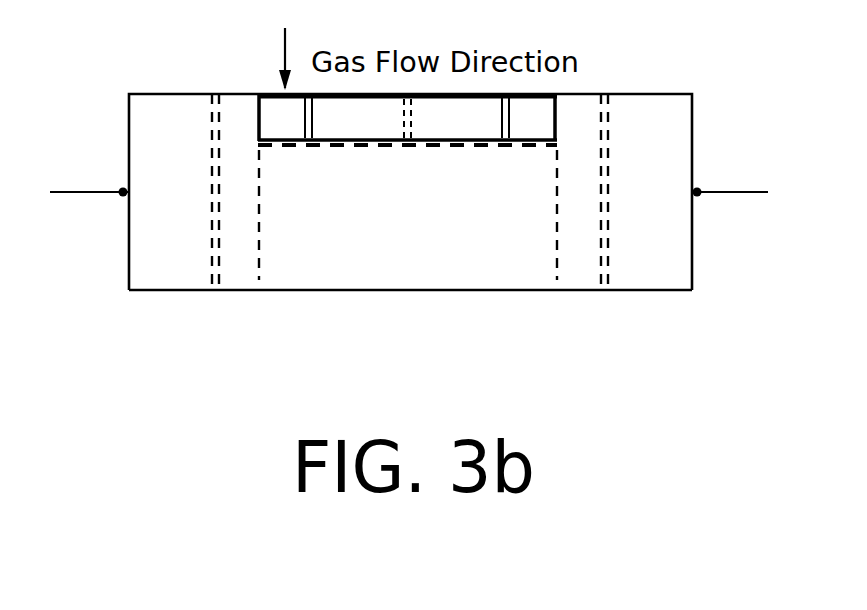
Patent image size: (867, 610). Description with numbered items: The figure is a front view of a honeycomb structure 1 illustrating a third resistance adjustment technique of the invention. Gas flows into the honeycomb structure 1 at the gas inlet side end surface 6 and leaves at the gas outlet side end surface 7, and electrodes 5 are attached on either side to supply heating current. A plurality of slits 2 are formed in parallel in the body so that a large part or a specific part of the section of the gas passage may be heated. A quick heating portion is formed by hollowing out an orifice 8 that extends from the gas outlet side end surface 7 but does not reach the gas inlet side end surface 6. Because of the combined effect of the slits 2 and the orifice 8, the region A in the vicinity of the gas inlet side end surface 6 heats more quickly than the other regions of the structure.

The honeycomb structure 1 is at (692, 270).
The slits 2 is at (305, 118).
The electrodes 5 is at (107, 192).
The gas inlet side end surface 6 is at (190, 94).
The gas outlet side end surface 7 is at (187, 290).
The orifice 8 is at (485, 276).
The region A is at (557, 119).